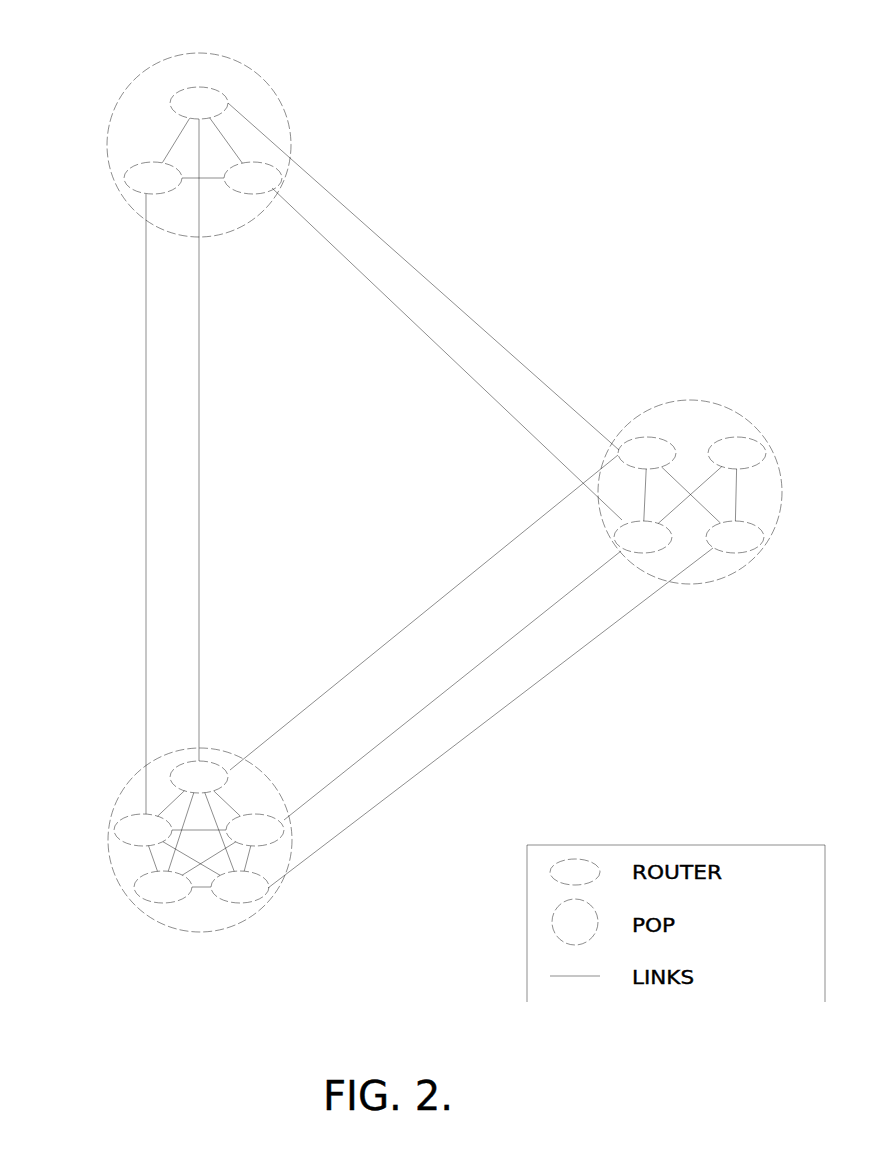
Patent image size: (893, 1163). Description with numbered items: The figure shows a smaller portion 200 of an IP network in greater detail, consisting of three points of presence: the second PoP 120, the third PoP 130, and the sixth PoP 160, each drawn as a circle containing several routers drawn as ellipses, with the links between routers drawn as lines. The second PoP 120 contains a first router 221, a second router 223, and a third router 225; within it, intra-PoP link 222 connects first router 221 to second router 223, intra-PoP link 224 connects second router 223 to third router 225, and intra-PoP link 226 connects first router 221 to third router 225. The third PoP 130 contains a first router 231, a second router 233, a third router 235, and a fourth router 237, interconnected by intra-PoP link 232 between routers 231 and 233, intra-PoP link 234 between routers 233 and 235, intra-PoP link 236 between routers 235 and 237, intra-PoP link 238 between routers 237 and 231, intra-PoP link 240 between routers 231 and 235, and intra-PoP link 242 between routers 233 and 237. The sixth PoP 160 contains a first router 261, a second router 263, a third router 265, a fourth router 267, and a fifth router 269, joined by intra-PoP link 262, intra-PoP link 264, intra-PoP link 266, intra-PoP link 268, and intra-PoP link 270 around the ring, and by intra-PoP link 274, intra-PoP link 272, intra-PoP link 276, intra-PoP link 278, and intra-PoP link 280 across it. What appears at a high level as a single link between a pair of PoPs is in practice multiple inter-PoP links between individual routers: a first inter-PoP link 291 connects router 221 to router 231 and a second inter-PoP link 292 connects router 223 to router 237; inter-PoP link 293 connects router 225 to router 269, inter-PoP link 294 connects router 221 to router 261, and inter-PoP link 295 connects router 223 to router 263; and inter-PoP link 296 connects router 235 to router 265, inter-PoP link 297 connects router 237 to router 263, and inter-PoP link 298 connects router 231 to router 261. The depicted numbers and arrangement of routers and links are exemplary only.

The second PoP 120 is at (278, 94).
The third PoP 130 is at (745, 408).
The sixth PoP 160 is at (110, 822).
The smaller portion of the IP network 200 is at (596, 216).
The first router 221 is at (199, 87).
The intra-PoP link 222 is at (233, 137).
The second router 223 is at (278, 170).
The intra-PoP link 224 is at (209, 179).
The third router 225 is at (124, 180).
The intra-PoP link 226 is at (165, 135).
The first router 231 is at (647, 437).
The intra-PoP link 232 is at (697, 452).
The second router 233 is at (753, 440).
The intra-PoP link 234 is at (742, 493).
The third router 235 is at (765, 537).
The intra-PoP link 236 is at (692, 533).
The fourth router 237 is at (643, 553).
The intra-PoP link 238 is at (628, 512).
The intra-PoP link 240 is at (742, 505).
The intra-PoP link 242 is at (680, 442).
The first router 261 is at (140, 787).
The intra-PoP link 262 is at (260, 805).
The second router 263 is at (290, 843).
The intra-PoP link 264 is at (212, 850).
The third router 265 is at (237, 904).
The intra-PoP link 266 is at (195, 903).
The fourth router 267 is at (133, 892).
The intra-PoP link 268 is at (138, 858).
The fifth router 269 is at (113, 845).
The intra-PoP link 270 is at (138, 789).
The intra-PoP link 272 is at (222, 792).
The intra-PoP link 274 is at (182, 762).
The intra-PoP link 276 is at (260, 806).
The intra-PoP link 278 is at (263, 853).
The intra-PoP link 280 is at (204, 879).
The first inter-PoP link 291 is at (408, 258).
The second inter-PoP link 292 is at (442, 355).
The inter-PoP link 293 is at (145, 362).
The inter-PoP link 294 is at (197, 410).
The inter-PoP link 295 is at (262, 497).
The inter-PoP link 296 is at (613, 623).
The inter-PoP link 297 is at (370, 662).
The inter-PoP link 298 is at (510, 637).